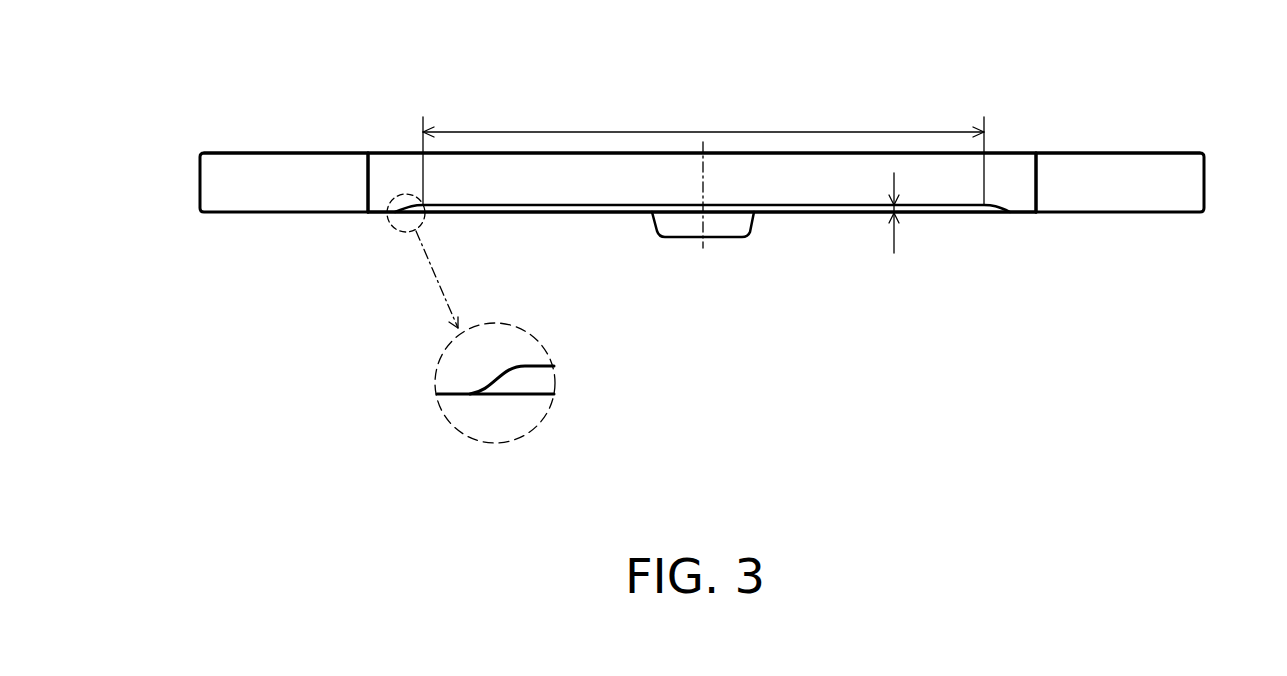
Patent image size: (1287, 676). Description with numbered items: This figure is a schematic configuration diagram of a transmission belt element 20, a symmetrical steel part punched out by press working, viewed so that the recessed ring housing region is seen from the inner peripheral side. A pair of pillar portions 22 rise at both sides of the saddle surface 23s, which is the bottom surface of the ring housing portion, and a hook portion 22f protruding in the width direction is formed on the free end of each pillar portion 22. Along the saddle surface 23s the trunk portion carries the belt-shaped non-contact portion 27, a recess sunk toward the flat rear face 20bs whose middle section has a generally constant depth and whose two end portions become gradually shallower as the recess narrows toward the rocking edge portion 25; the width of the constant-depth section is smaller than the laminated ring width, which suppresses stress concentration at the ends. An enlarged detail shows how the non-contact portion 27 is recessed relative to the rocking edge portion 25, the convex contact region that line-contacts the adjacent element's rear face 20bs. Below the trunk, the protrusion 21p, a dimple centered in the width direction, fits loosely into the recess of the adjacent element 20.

The element 20 is at (701, 263).
The pillar portion 22 is at (212, 165).
The hook portion 22f is at (342, 165).
The rear face 20bs is at (273, 156).
The saddle surface 23s is at (618, 190).
The protrusion 21p is at (743, 223).
The non-contact portion 27 is at (948, 209).
The rocking edge portion 25 is at (437, 394).